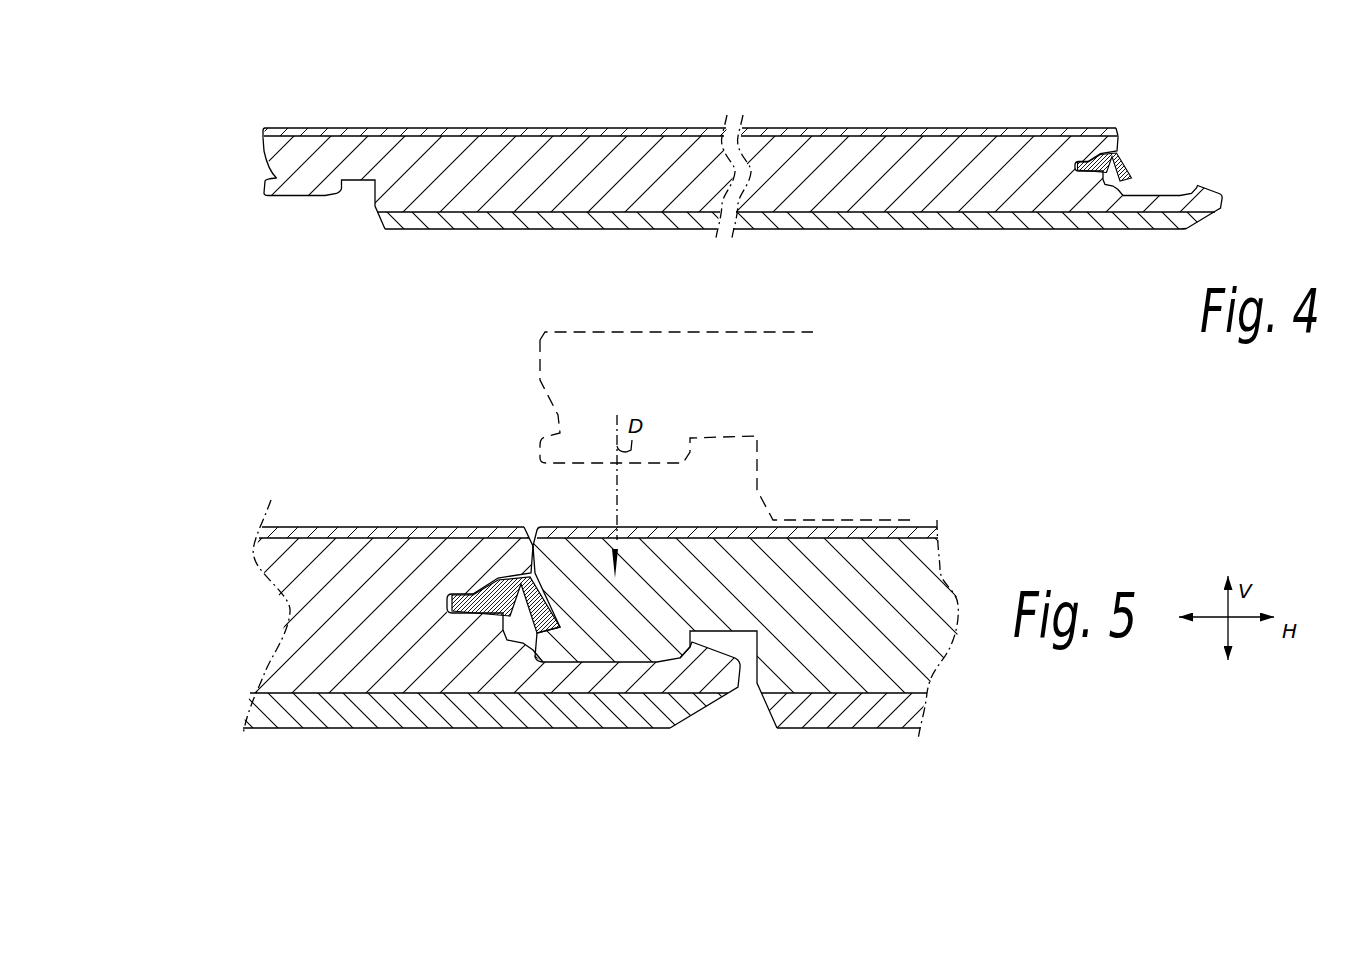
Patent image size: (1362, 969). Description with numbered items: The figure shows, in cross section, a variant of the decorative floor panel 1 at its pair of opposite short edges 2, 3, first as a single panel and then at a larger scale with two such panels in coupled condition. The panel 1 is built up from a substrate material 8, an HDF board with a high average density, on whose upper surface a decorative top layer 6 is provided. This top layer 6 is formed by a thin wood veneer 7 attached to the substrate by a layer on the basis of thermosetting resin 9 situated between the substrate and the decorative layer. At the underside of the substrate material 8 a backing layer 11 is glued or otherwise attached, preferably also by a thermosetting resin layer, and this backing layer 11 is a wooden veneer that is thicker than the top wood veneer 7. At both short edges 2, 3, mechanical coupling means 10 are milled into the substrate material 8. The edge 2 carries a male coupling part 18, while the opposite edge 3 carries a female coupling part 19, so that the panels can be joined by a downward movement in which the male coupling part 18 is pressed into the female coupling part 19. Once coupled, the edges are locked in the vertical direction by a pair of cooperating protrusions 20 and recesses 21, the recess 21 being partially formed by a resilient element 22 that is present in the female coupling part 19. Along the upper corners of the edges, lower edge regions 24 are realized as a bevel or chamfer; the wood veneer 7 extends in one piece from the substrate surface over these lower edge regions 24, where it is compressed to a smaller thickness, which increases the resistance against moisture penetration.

In FIG. 4, the floor panel 1 is at (1165, 121).
In FIG. 5, the floor panel 1 is at (297, 485).
In FIG. 4, the short edge 2 is at (242, 185).
In FIG. 4, the short edge 3 is at (1188, 155).
In FIG. 4, the decorative top layer 6 is at (290, 128).
In FIG. 5, the decorative top layer 6 is at (348, 532).
In FIG. 4, the wood veneer 7 is at (442, 129).
In FIG. 5, the wood veneer 7 is at (310, 530).
In FIG. 4, the substrate material 8 is at (525, 183).
In FIG. 5, the substrate material 8 is at (313, 618).
In FIG. 4, the layer on the basis of thermosetting resin 9 is at (530, 128).
In FIG. 5, the layer on the basis of thermosetting resin 9 is at (432, 528).
In FIG. 4, the mechanical coupling means 10 is at (312, 208).
In FIG. 4, the backing layer 11 is at (773, 222).
In FIG. 5, the backing layer 11 is at (288, 724).
In FIG. 4, the male coupling part 18 is at (268, 148).
In FIG. 5, the male coupling part 18 is at (620, 615).
In FIG. 4, the female coupling part 19 is at (1183, 197).
In FIG. 4, the protrusion 20 is at (270, 197).
In FIG. 5, the protrusion 20 is at (540, 447).
In FIG. 4, the recess 21 is at (1127, 188).
In FIG. 5, the recess 21 is at (512, 576).
In FIG. 4, the resilient element 22 is at (1117, 184).
In FIG. 5, the resilient element 22 is at (519, 576).
In FIG. 4, the lower edge region 24 is at (263, 130).
In FIG. 5, the lower edge region 24 is at (538, 340).